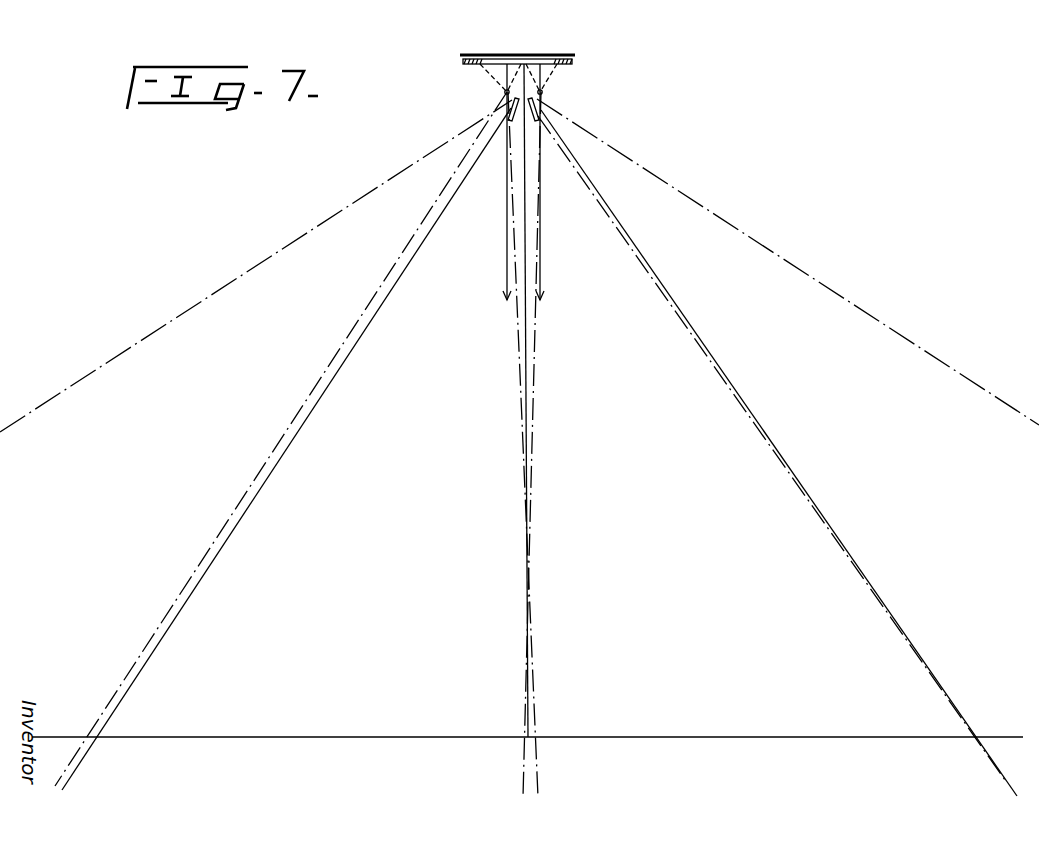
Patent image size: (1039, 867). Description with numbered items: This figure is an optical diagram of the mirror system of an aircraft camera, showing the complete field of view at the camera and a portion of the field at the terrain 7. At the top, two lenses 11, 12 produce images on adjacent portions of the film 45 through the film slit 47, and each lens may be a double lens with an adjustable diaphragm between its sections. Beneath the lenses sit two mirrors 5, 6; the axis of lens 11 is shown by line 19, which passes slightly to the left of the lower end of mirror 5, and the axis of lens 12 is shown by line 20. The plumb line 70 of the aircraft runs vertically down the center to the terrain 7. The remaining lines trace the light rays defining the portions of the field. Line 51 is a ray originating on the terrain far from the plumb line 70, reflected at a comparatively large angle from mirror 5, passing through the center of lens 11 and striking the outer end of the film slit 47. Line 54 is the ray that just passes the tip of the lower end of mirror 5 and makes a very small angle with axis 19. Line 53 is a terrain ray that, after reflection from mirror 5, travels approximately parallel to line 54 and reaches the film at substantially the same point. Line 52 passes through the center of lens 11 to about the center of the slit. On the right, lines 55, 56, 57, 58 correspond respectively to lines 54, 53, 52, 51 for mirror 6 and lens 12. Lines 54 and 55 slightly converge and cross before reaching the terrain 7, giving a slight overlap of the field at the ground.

The terrain 7 is at (267, 735).
The film 45 is at (525, 60).
The film slit 47 is at (558, 66).
The lens 11 is at (503, 92).
The lens 12 is at (545, 92).
The mirror 5 is at (505, 105).
The mirror 6 is at (543, 105).
The optical axis of lens 11 19 is at (507, 286).
The optical axis of lens 12 20 is at (541, 286).
The plumb line 70 is at (528, 423).
The light ray path 51 is at (192, 307).
The light ray path 52 is at (373, 296).
The light ray path 53 is at (110, 730).
The light ray path 54 is at (516, 347).
The light ray path 55 is at (536, 355).
The light ray path 56 is at (657, 289).
The light ray path 57 is at (680, 297).
The light ray path 58 is at (785, 254).